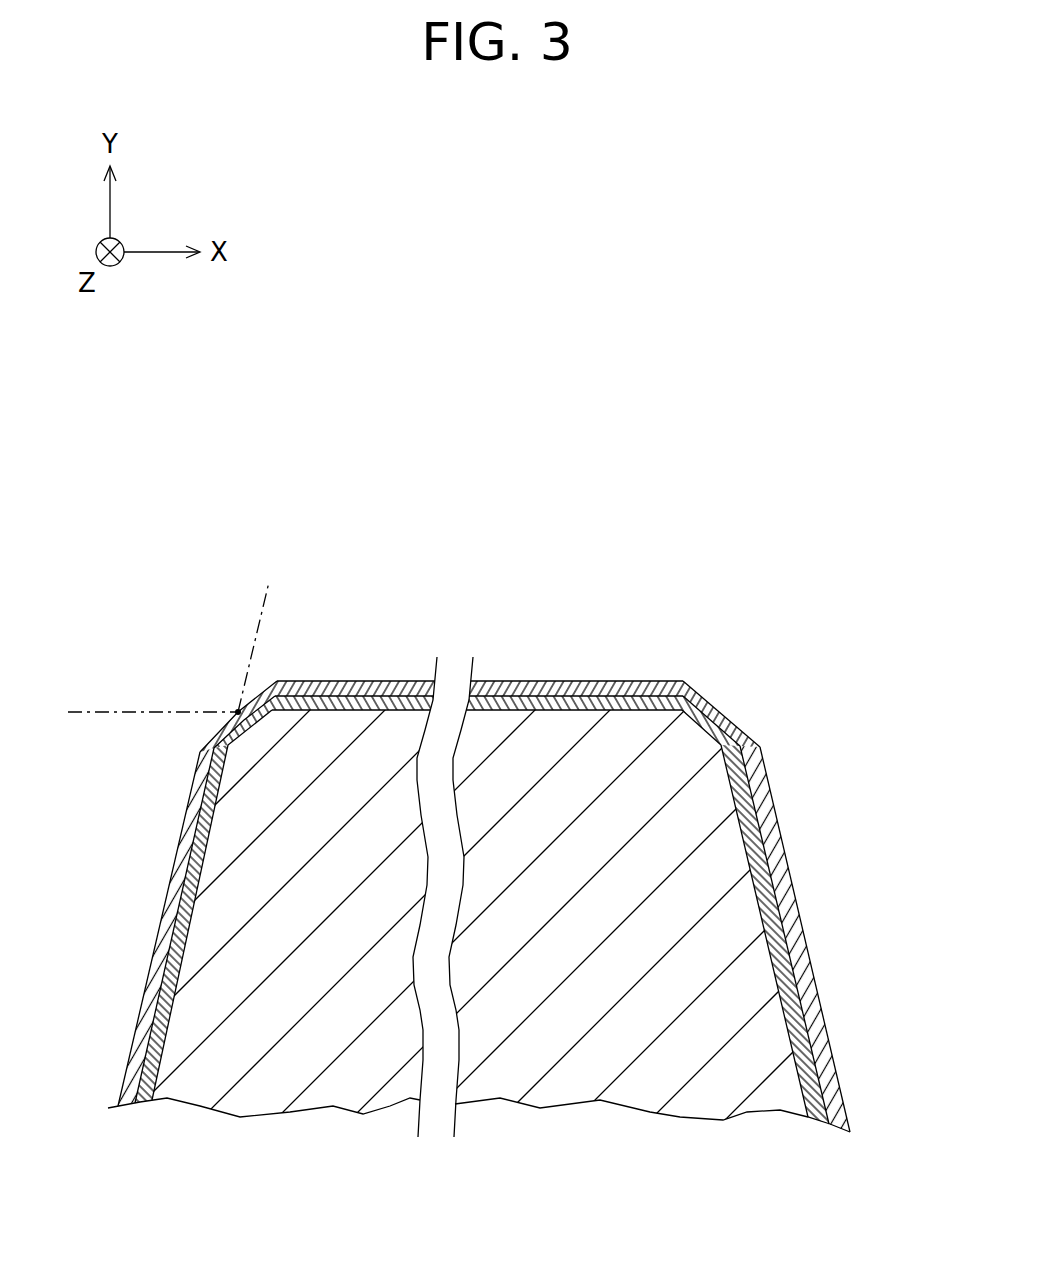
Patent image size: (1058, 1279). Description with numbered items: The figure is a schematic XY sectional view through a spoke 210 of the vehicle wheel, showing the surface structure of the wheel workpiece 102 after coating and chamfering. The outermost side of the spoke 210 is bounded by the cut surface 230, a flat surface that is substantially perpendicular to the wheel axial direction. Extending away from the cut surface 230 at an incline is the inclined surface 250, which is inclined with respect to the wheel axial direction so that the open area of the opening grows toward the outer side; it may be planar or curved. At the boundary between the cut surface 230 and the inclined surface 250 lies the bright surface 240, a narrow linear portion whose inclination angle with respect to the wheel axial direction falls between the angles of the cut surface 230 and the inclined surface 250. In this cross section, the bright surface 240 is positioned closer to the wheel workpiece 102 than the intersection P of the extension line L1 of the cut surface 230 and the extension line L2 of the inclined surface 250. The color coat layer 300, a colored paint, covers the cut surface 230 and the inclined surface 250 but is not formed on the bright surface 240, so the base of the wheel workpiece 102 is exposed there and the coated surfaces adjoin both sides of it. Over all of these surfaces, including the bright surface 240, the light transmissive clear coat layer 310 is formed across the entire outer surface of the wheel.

The wheel workpiece 102 is at (777, 1080).
The spoke 210 is at (582, 643).
The cut surface 230 is at (633, 684).
The bright surface 240 is at (237, 717).
The inclined surface 250 is at (193, 882).
The color coat layer 300 is at (372, 693).
The clear coat layer 310 is at (503, 697).
The extension line of the cut surface L1 is at (125, 710).
The extension line of the inclined surface L2 is at (263, 595).
The intersection P is at (238, 712).